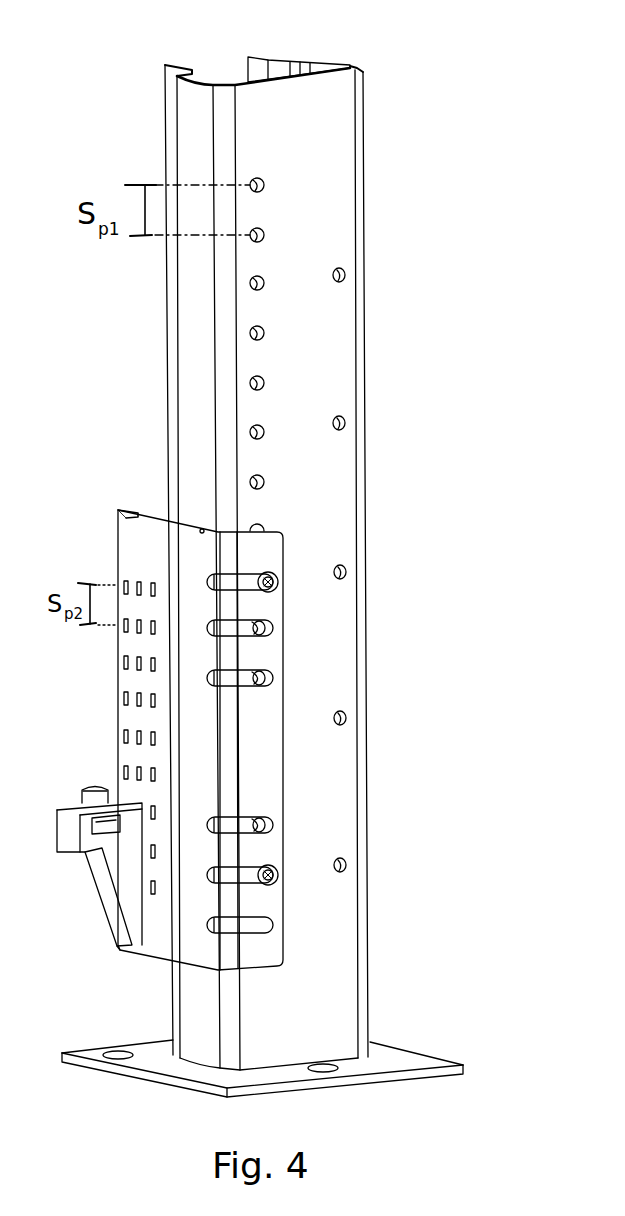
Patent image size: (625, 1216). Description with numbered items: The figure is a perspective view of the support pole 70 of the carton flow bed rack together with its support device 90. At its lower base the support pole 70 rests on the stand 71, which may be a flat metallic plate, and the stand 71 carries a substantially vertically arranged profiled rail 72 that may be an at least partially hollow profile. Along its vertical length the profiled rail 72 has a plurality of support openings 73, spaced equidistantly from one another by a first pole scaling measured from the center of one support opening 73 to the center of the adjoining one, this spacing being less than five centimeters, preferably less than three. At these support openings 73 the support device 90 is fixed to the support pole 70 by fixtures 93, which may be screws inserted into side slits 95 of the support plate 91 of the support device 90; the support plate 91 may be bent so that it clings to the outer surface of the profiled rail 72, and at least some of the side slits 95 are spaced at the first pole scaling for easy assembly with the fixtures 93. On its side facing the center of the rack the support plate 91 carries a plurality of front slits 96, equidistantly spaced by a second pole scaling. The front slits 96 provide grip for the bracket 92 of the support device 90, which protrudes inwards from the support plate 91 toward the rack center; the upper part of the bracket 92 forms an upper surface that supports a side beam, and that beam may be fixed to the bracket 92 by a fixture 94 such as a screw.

The support pole 70 is at (319, 563).
The stand 71 is at (412, 1057).
The profiled rail 72 is at (340, 375).
The support openings 73 is at (263, 381).
The support device 90 is at (185, 740).
The support plate 91 is at (260, 775).
The bracket 92 is at (123, 877).
The fixtures 93 is at (271, 573).
The fixture 94 is at (83, 787).
The side slits 95 is at (252, 668).
The front slits 96 is at (125, 660).